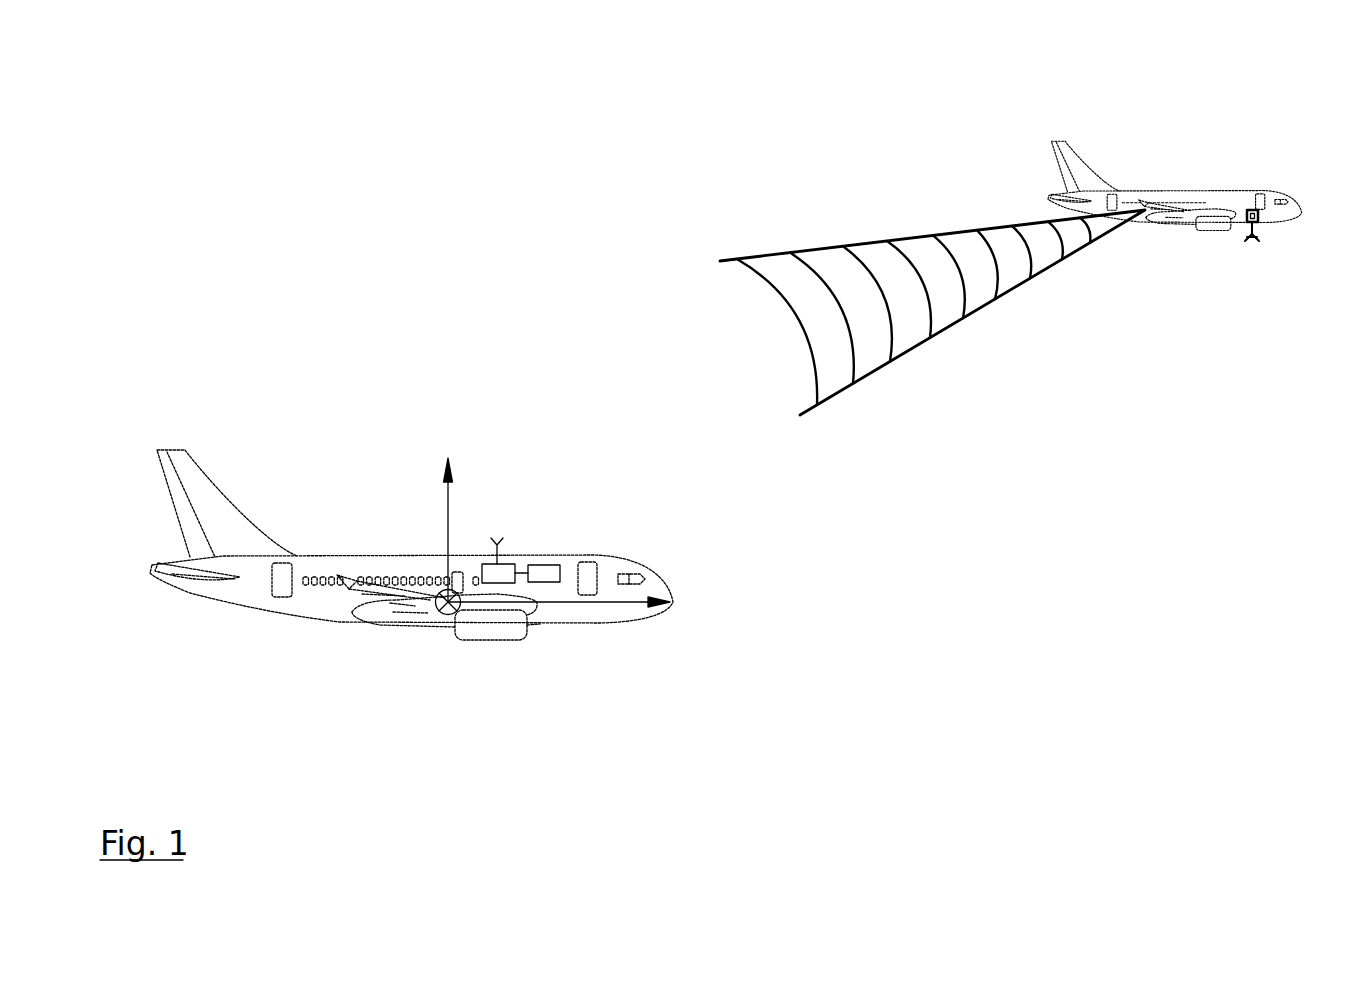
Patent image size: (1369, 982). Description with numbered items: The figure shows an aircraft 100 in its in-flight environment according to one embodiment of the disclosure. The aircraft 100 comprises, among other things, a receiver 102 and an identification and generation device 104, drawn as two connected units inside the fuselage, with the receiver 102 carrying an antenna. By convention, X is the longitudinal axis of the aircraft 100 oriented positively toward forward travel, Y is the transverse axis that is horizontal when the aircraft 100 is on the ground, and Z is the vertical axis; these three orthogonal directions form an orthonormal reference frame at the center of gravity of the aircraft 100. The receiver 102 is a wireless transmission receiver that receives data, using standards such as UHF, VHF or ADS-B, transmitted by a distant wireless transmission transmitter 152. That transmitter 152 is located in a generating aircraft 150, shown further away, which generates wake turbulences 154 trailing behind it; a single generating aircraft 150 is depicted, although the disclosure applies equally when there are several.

The aircraft 100 is at (552, 718).
The receiver 102 is at (507, 567).
The identification and generation device 104 is at (557, 577).
The generating aircraft 150 is at (1082, 168).
The wireless transmission transmitter 152 is at (1258, 215).
The wake turbulences 154 is at (973, 258).